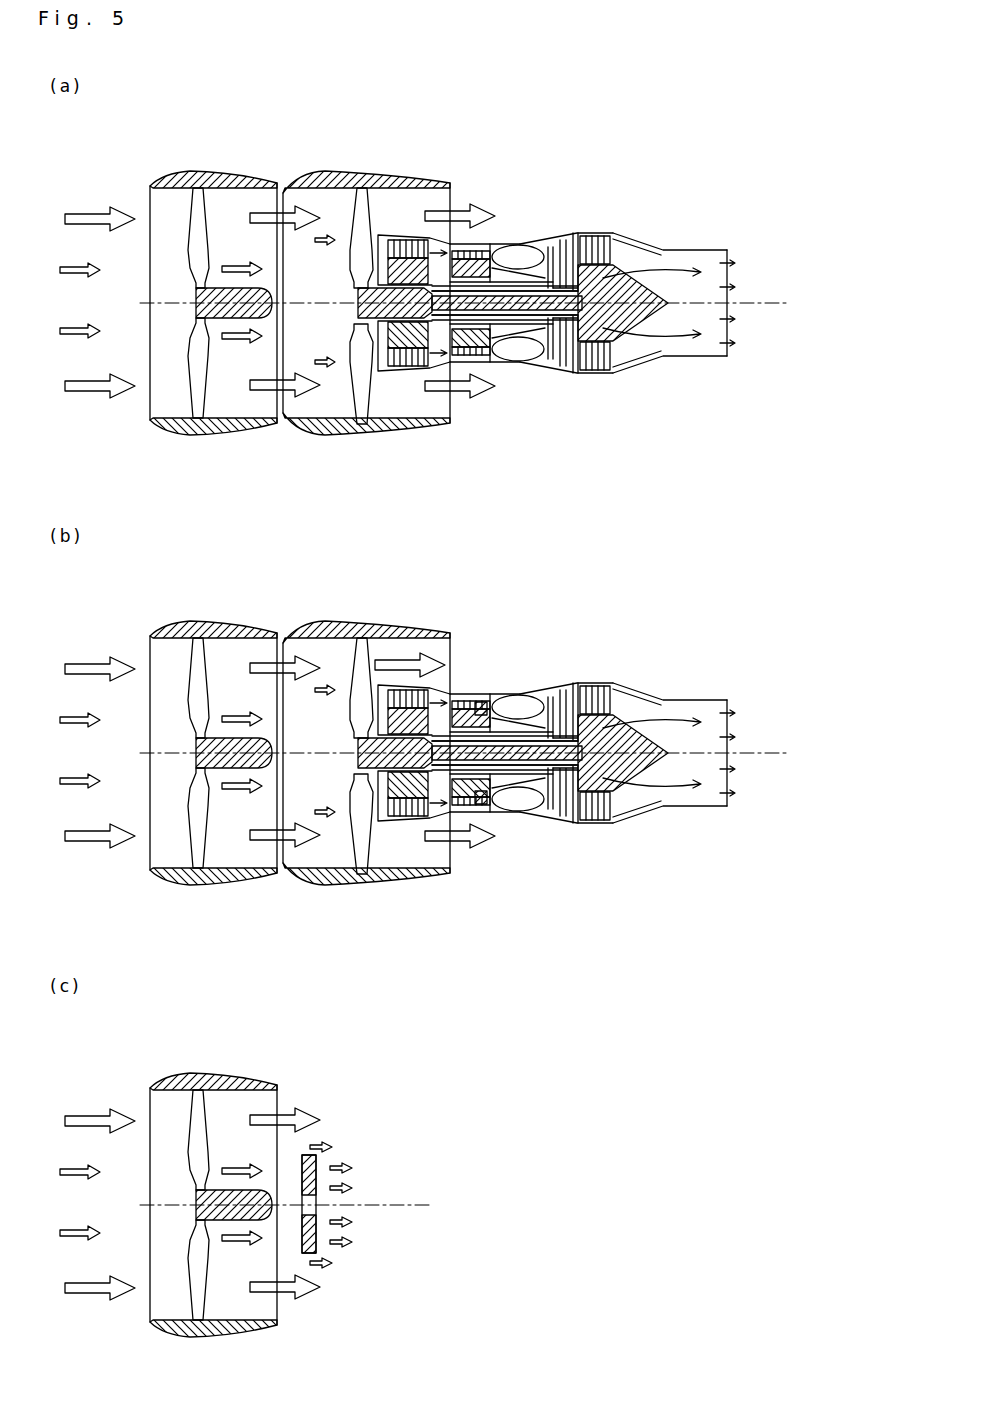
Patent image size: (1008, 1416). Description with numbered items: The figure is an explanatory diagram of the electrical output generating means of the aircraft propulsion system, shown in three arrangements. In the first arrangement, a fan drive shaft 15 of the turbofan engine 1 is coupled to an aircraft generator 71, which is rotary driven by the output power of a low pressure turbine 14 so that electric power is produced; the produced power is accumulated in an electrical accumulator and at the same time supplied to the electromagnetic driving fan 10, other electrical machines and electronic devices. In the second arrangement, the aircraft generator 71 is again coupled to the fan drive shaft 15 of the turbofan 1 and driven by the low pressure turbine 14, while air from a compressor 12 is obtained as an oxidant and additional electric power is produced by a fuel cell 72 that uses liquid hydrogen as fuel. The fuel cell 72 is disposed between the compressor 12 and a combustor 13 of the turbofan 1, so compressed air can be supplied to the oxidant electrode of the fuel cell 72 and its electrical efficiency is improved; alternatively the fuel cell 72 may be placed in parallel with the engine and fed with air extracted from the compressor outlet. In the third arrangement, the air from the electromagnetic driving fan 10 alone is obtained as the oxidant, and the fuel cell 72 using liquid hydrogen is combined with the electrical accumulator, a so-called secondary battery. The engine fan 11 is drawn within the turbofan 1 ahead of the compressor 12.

The turbofan engine 1 is at (367, 176).
The electromagnetic driving fan 10 is at (192, 168).
The fan 11 is at (368, 218).
The compressor 12 is at (453, 697).
The combustor 13 is at (530, 706).
The low pressure turbine 14 is at (608, 277).
The fan drive shaft 15 is at (547, 313).
The aircraft generator 71 is at (423, 358).
The fuel cell 72 is at (481, 702).